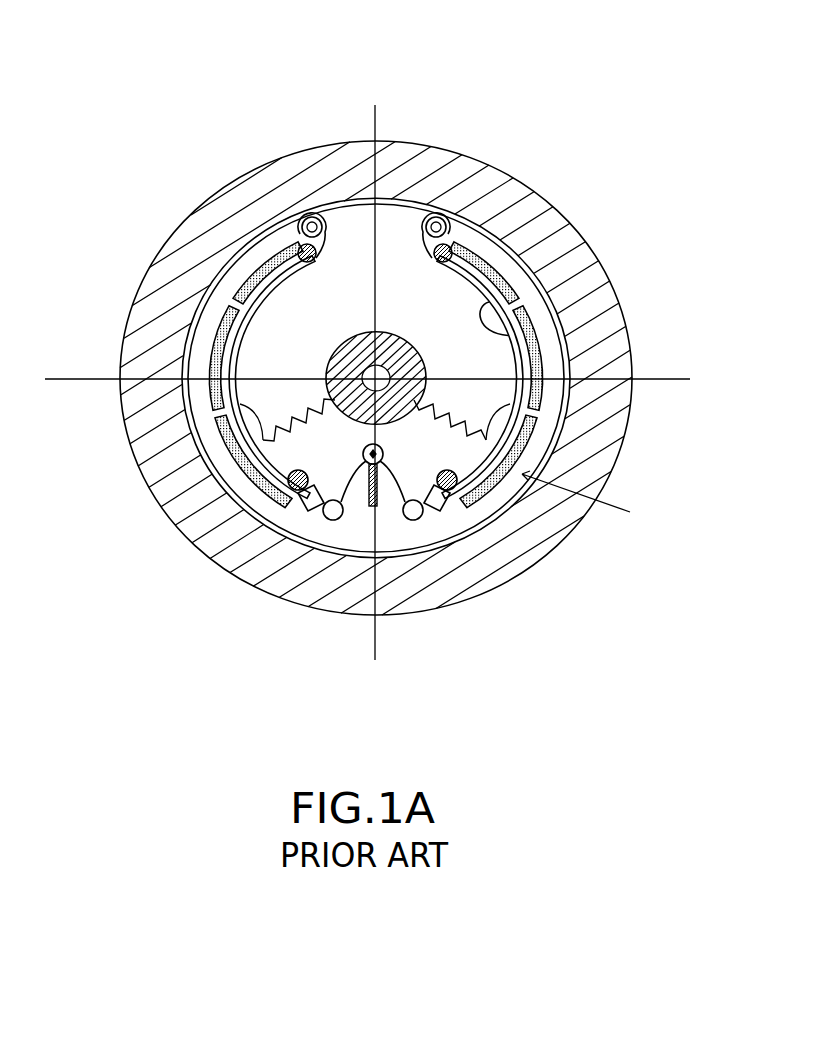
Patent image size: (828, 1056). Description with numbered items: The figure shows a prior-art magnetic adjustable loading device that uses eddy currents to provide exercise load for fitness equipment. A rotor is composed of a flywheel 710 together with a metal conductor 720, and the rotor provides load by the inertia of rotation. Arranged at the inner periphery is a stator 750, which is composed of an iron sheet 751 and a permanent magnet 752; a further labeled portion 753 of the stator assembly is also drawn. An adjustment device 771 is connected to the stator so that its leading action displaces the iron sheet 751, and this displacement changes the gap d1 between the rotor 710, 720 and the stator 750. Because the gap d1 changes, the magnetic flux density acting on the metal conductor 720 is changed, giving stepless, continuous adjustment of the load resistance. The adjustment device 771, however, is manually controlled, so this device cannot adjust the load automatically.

The flywheel 710 is at (208, 237).
The metal conductor 720 is at (347, 203).
The stator 750 is at (262, 315).
The iron sheet 751 is at (568, 300).
The permanent magnet 752 is at (567, 225).
The friction lining 753 is at (225, 401).
The adjustment device 771 is at (363, 453).
The gap d1 is at (591, 499).